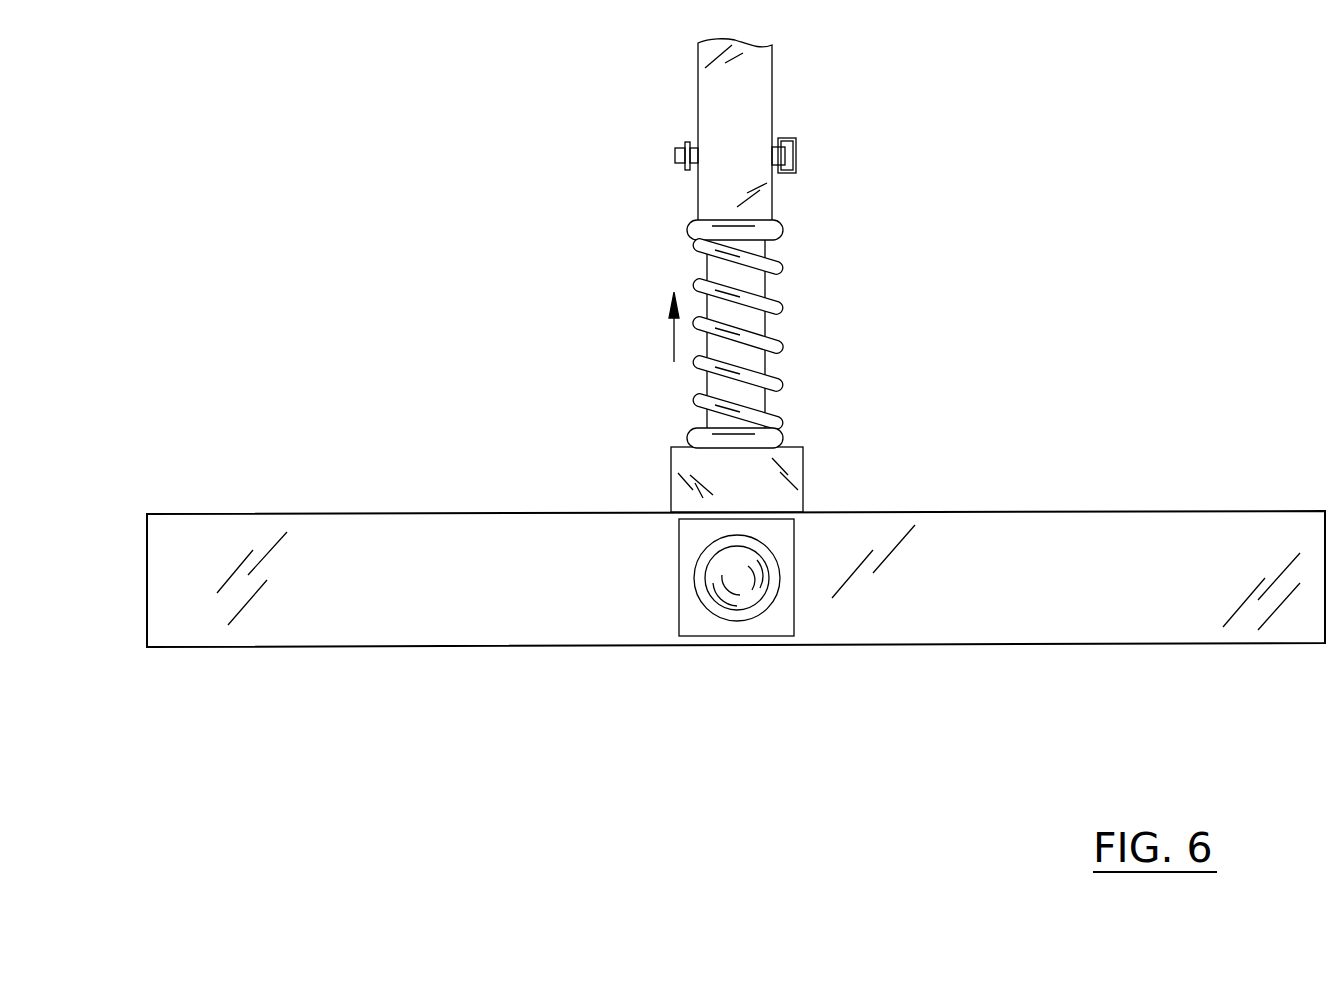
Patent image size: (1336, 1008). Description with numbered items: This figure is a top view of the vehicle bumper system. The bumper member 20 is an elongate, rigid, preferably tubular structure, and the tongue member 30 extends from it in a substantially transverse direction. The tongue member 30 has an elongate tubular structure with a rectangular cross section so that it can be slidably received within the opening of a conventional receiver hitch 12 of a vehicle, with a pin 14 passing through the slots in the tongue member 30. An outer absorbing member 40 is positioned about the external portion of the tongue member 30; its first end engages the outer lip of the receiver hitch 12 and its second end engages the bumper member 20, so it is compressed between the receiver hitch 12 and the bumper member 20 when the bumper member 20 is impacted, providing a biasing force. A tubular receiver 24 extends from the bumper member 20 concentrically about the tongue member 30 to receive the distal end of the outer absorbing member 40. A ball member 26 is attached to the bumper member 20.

The receiver hitch 12 is at (757, 98).
The pin 14 is at (778, 152).
The bumper member 20 is at (462, 625).
The tubular receiver 24 is at (672, 487).
The ball member 26 is at (759, 608).
The tongue member 30 is at (779, 325).
The outer absorbing member 40 is at (785, 350).